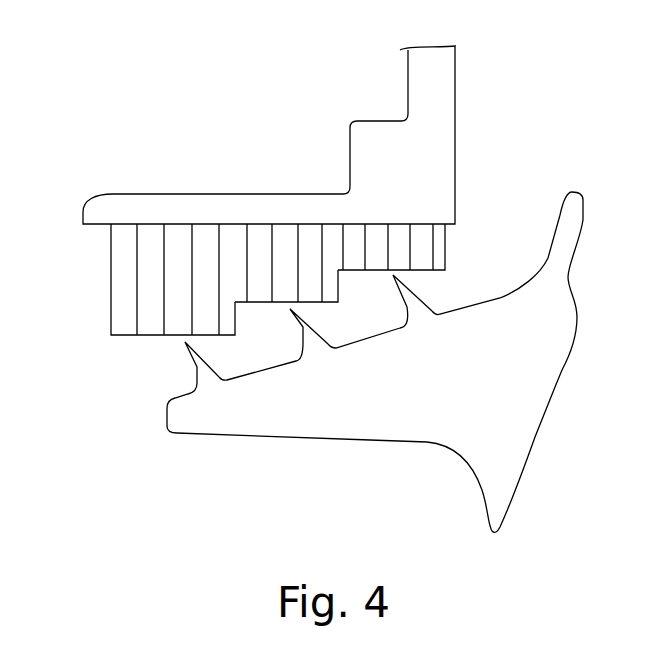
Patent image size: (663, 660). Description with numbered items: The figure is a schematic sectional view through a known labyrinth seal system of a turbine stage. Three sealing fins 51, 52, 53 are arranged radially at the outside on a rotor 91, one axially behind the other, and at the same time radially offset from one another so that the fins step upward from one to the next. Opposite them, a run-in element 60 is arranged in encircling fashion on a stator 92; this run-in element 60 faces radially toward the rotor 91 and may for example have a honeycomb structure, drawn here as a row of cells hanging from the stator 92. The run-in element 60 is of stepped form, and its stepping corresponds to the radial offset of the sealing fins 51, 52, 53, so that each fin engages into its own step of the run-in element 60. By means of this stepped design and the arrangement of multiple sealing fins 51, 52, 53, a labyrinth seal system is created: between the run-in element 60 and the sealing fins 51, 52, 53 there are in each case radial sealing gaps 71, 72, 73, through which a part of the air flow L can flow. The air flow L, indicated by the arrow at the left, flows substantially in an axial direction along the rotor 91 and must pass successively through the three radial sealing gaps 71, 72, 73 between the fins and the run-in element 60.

The sealing fin 51 is at (217, 378).
The sealing fin 52 is at (322, 340).
The sealing fin 53 is at (418, 306).
The run-in element 60 is at (268, 237).
The radial sealing gap 71 is at (176, 341).
The radial sealing gap 72 is at (283, 312).
The radial sealing gap 73 is at (385, 277).
The rotor 91 is at (375, 367).
The stator 92 is at (450, 80).
The air flow L is at (108, 381).